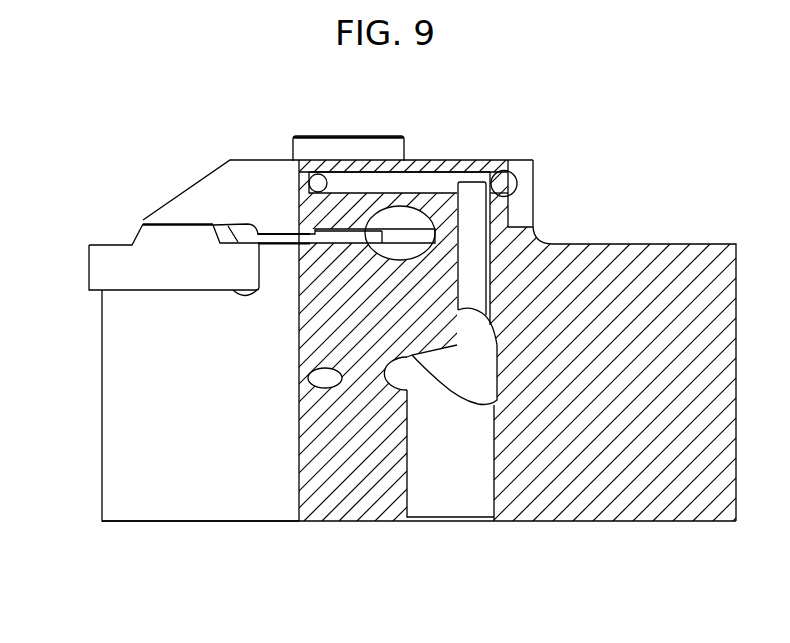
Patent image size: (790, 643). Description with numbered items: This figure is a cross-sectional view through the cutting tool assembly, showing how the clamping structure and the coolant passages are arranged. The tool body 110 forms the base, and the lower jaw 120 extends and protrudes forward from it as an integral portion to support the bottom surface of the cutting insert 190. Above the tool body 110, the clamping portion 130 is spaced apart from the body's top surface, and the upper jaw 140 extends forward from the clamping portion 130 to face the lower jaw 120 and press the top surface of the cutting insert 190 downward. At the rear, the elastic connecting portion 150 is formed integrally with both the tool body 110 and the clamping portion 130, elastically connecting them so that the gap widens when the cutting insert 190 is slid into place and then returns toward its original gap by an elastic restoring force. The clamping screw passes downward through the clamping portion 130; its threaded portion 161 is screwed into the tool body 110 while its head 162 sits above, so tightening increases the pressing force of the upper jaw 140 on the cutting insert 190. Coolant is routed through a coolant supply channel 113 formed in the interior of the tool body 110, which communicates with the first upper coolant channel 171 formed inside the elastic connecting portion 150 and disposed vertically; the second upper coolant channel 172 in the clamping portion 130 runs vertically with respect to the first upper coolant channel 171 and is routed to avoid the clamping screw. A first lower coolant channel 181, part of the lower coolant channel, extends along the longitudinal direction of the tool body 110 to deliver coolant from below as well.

The tool body 110 is at (677, 262).
The coolant supply channel 113 is at (447, 455).
The lower jaw 120 is at (120, 317).
The clamping portion 130 is at (474, 228).
The upper jaw 140 is at (198, 199).
The elastic connecting portion 150 is at (502, 207).
The threaded portion 161 is at (333, 238).
The head 162 is at (378, 150).
The first upper coolant channel 171 is at (505, 170).
The second upper coolant channel 172 is at (420, 185).
The first lower coolant channel 181 is at (318, 378).
The cutting insert 190 is at (108, 257).